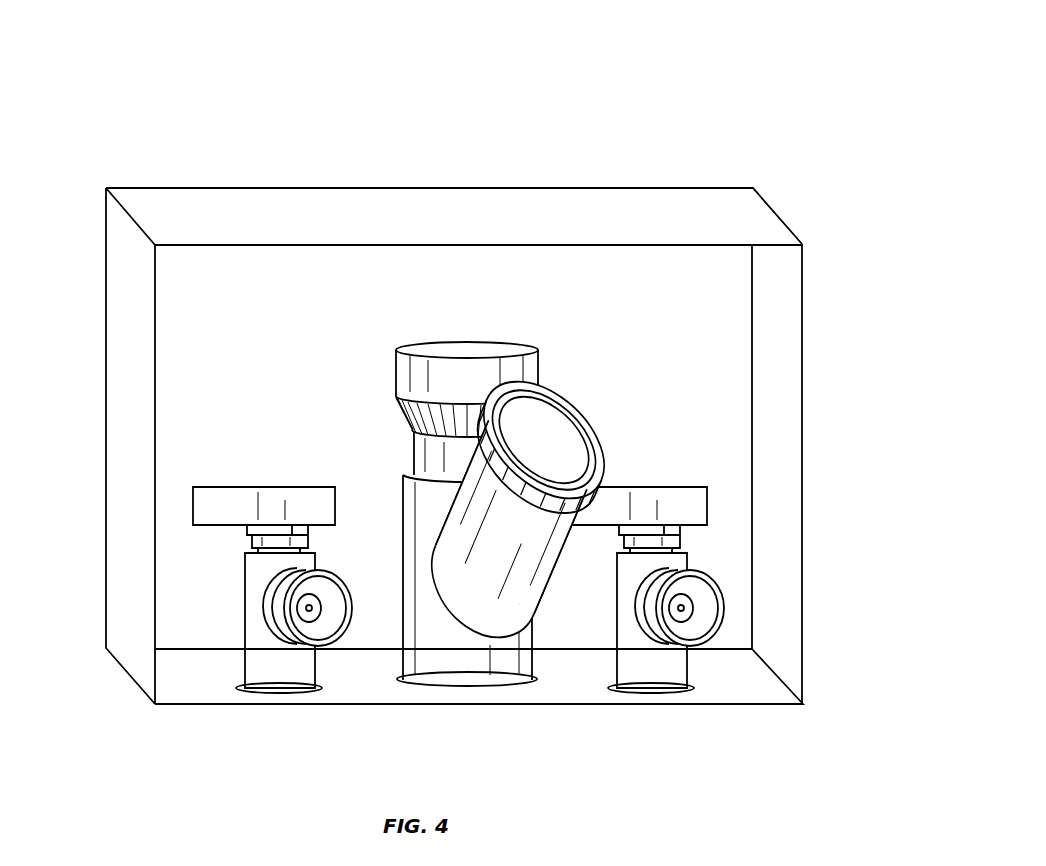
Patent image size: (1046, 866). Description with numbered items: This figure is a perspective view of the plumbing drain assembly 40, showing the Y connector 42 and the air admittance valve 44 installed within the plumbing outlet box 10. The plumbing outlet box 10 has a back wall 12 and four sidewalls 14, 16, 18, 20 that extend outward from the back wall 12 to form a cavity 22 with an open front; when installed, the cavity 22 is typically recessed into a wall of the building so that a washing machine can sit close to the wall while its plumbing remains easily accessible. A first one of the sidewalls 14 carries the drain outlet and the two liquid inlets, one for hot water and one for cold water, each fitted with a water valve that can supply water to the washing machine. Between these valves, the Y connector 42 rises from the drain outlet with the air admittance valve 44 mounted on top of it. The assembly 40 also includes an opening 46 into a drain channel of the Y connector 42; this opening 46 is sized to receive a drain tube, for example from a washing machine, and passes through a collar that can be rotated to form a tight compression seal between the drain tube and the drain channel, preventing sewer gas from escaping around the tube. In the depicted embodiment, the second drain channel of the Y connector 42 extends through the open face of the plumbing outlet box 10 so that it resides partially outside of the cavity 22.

The plumbing drain assembly 40 is at (628, 97).
The plumbing outlet box 10 is at (168, 205).
The back wall 12 is at (323, 278).
The sidewall 14 is at (740, 677).
The sidewall 16 is at (613, 225).
The sidewall 18 is at (126, 418).
The sidewall 20 is at (775, 430).
The cavity 22 is at (478, 474).
The Y connector 42 is at (425, 500).
The air admittance valve 44 is at (418, 373).
The opening 46 is at (556, 440).